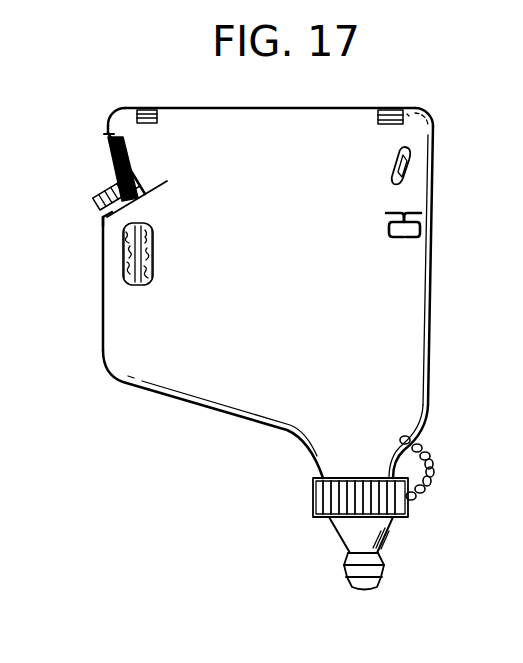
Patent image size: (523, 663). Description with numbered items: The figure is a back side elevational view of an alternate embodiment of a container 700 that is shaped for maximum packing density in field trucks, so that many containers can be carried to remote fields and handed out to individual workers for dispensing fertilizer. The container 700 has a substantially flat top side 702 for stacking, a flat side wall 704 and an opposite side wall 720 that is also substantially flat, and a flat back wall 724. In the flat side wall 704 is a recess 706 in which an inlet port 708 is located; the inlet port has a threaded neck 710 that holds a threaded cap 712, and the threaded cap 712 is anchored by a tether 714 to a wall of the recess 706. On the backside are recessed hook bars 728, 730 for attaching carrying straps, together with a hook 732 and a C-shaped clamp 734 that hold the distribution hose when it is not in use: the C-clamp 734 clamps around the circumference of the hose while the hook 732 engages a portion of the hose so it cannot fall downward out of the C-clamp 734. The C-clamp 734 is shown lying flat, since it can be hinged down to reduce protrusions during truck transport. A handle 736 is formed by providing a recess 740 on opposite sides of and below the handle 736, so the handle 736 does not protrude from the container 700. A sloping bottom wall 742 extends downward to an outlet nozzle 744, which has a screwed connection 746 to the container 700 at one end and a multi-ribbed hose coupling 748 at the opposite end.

The container 700 is at (437, 377).
The top side 702 is at (245, 107).
The flat side wall 704 is at (102, 258).
The recess 706 is at (103, 217).
The inlet port 708 is at (100, 192).
The threaded neck 710 is at (158, 187).
The threaded cap 712 is at (113, 162).
The tether 714 is at (109, 141).
The opposite side wall 720 is at (433, 293).
The back wall 724 is at (213, 383).
The recessed hook bar 728 is at (148, 109).
The recessed hook bar 730 is at (391, 109).
The hook 732 is at (412, 153).
The C-shaped clamp 734 is at (433, 223).
The handle 736 is at (149, 225).
The recess 740 is at (123, 274).
The sloping bottom wall 742 is at (253, 417).
The outlet nozzle 744 is at (388, 532).
The screwed connection 746 is at (313, 495).
The multi-ribbed hose coupling 748 is at (348, 571).